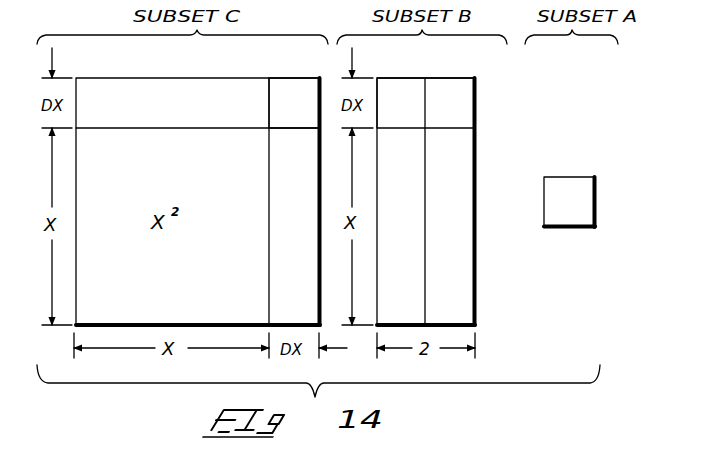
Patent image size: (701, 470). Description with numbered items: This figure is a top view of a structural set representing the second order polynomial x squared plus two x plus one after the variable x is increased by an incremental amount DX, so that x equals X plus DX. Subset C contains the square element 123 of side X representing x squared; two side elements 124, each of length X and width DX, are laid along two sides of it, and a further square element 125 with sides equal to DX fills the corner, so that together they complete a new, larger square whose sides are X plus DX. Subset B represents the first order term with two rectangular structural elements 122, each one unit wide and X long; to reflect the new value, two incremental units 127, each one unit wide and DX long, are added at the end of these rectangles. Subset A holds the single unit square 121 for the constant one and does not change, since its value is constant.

The unit square 121 is at (577, 211).
The rectangular structural element 122 is at (408, 294).
The square element 123 is at (198, 201).
The side element 124 is at (198, 201).
The square element 125 is at (294, 103).
The incremental unit 127 is at (408, 108).